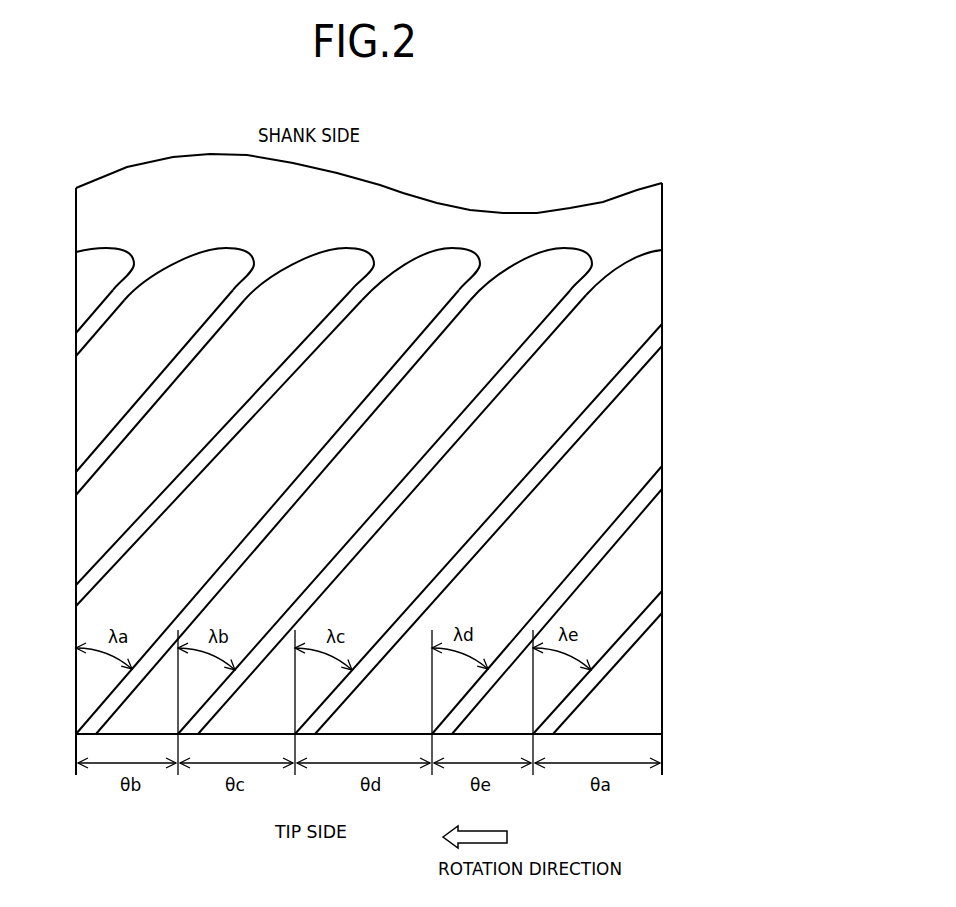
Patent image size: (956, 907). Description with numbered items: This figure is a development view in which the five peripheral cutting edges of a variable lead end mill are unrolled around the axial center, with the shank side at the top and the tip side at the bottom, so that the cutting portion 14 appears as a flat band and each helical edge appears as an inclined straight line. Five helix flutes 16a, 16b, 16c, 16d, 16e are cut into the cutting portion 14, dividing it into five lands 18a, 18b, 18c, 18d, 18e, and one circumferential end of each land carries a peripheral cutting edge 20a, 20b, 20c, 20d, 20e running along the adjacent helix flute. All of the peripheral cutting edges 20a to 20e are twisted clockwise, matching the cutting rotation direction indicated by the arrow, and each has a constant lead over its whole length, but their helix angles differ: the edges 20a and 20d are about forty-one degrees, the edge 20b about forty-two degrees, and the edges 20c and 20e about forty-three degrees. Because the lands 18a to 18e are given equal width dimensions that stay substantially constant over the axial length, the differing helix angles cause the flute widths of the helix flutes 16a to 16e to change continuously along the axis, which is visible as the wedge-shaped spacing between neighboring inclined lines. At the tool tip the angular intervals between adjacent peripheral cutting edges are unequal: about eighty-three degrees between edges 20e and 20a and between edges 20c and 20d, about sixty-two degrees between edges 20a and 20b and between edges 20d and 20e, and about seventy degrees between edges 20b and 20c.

The cutting portion 14 is at (178, 840).
The helix flute 16a is at (262, 491).
The helix flute 16b is at (367, 491).
The helix flute 16c is at (483, 490).
The helix flute 16d is at (157, 341).
The helix flute 16e is at (177, 461).
The land 18a is at (411, 368).
The land 18b is at (521, 368).
The land 18c is at (617, 397).
The land 18d is at (198, 354).
The land 18e is at (296, 371).
The peripheral cutting edge 20a is at (200, 590).
The peripheral cutting edge 20b is at (305, 590).
The peripheral cutting edge 20c is at (424, 590).
The peripheral cutting edge 20d is at (129, 410).
The peripheral cutting edge 20e is at (117, 541).